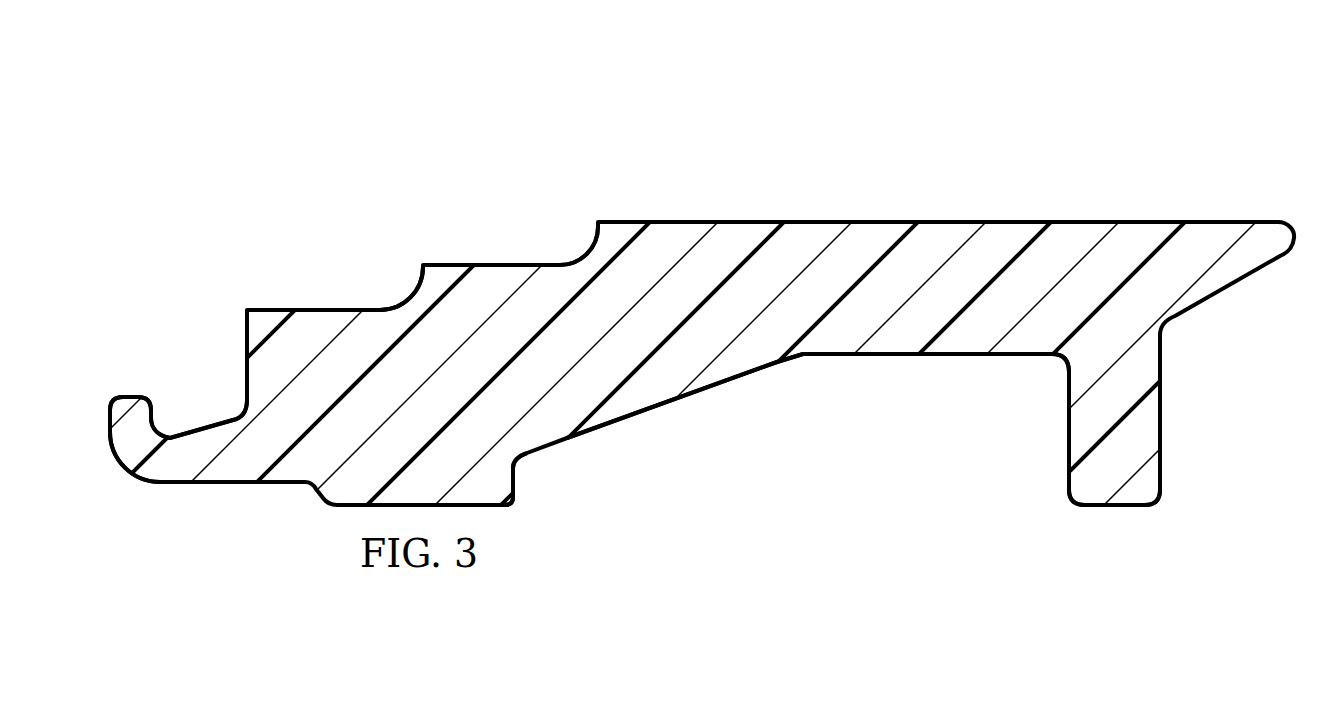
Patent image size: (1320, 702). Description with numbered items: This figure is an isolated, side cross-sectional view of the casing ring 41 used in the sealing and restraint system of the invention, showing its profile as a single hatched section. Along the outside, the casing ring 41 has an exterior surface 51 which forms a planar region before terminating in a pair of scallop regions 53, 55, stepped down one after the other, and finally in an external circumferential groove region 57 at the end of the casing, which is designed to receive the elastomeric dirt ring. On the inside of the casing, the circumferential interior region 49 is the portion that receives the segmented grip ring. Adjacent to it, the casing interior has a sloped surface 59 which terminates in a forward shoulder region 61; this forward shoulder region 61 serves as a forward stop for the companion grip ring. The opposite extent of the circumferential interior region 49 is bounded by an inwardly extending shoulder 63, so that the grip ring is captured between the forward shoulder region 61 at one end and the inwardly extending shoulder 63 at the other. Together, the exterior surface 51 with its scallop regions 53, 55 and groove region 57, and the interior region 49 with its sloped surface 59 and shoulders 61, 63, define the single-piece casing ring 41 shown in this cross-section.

The casing ring 41 is at (924, 115).
The circumferential interior region 49 is at (895, 357).
The exterior surface 51 is at (945, 220).
The scallop region 53 is at (502, 263).
The scallop region 55 is at (327, 308).
The external circumferential groove region 57 is at (208, 423).
The sloped surface 59 is at (723, 387).
The forward shoulder region 61 is at (513, 481).
The inwardly extending shoulder 63 is at (1068, 433).